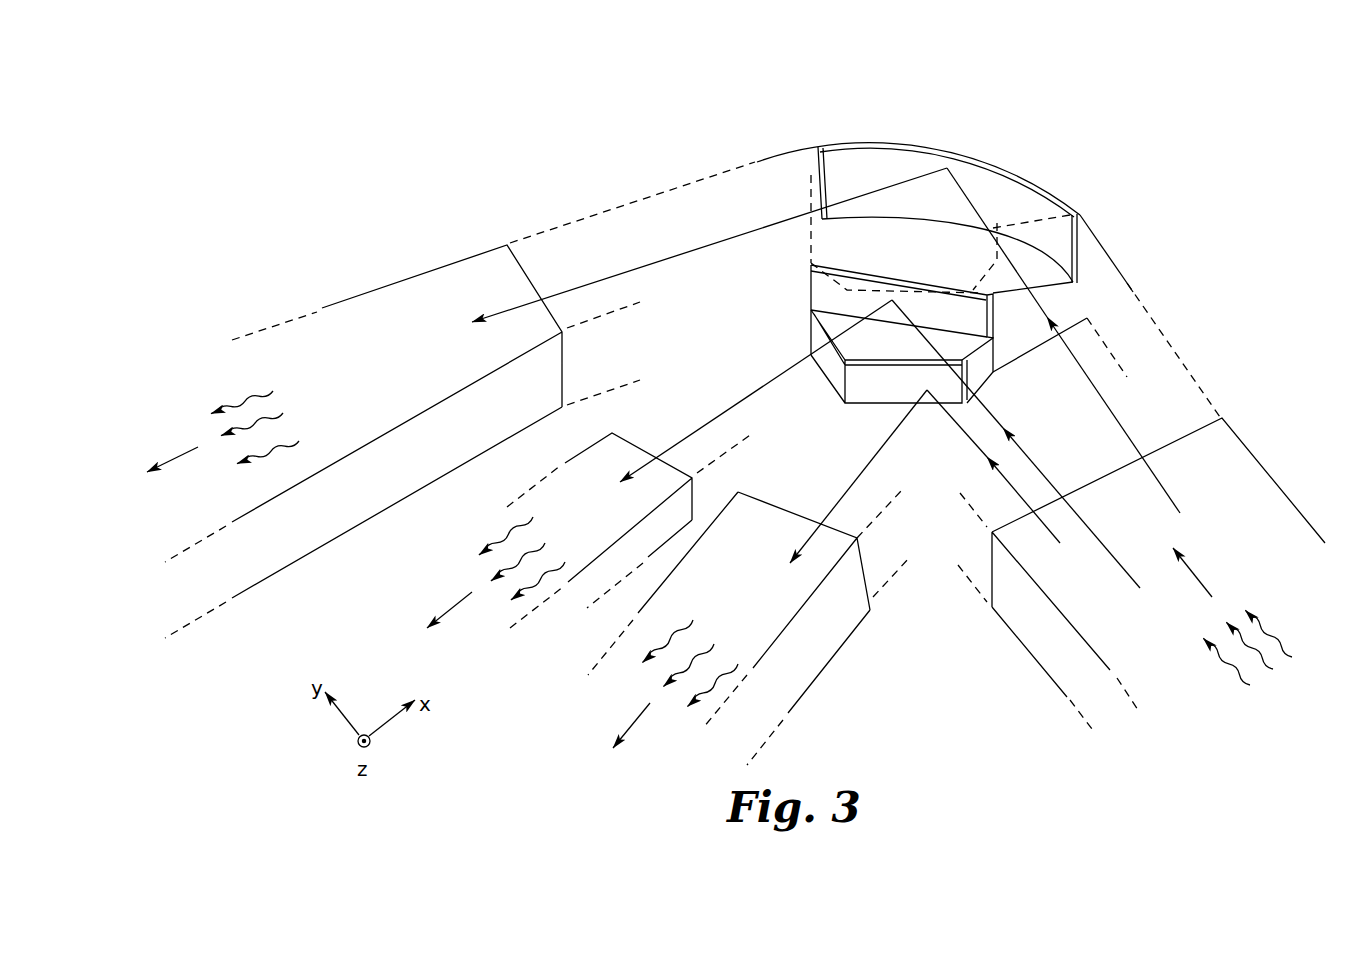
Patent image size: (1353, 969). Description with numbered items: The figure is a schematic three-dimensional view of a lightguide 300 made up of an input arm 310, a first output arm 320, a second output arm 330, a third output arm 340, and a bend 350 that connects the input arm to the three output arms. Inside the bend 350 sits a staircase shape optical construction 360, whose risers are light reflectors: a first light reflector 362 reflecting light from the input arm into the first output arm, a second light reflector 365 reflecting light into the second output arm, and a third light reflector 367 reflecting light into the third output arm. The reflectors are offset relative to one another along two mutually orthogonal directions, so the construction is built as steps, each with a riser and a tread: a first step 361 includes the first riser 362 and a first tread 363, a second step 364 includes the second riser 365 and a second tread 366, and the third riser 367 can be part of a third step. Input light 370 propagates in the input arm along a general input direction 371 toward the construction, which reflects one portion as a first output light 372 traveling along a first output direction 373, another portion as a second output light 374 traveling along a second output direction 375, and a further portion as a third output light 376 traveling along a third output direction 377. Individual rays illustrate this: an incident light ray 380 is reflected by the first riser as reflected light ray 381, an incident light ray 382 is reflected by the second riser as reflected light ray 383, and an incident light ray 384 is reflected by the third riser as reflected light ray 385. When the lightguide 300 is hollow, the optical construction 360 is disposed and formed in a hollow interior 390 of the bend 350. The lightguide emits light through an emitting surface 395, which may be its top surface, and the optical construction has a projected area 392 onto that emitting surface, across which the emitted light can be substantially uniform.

The lightguide 300 is at (1108, 148).
The input arm 310 is at (1020, 632).
The first output arm 320 is at (827, 653).
The second output arm 330 is at (577, 573).
The third output arm 340 is at (412, 277).
The bend 350 is at (959, 196).
The staircase shape optical construction 360 is at (972, 340).
The first step 361 is at (975, 373).
The first light reflector 362 is at (860, 395).
The first tread 363 is at (830, 323).
The second step 364 is at (1026, 323).
The second light reflector 365 is at (823, 287).
The second tread 366 is at (825, 240).
The third light reflector 367 is at (852, 162).
The input light 370 is at (1273, 650).
The input direction 371 is at (1197, 575).
The first output light 372 is at (717, 647).
The first output direction 373 is at (633, 722).
The second output light 374 is at (542, 532).
The second output direction 375 is at (450, 603).
The third output light 376 is at (268, 390).
The third output direction 377 is at (176, 455).
The incident light ray 380 is at (962, 430).
The reflected light ray 381 is at (835, 503).
The incident light ray 382 is at (1022, 452).
The reflected light ray 383 is at (732, 407).
The incident light ray 384 is at (1125, 428).
The reflected light ray 385 is at (582, 287).
The hollow interior 390 is at (1107, 372).
The projected area 392 is at (1042, 218).
The emitting surface 395 is at (1100, 267).